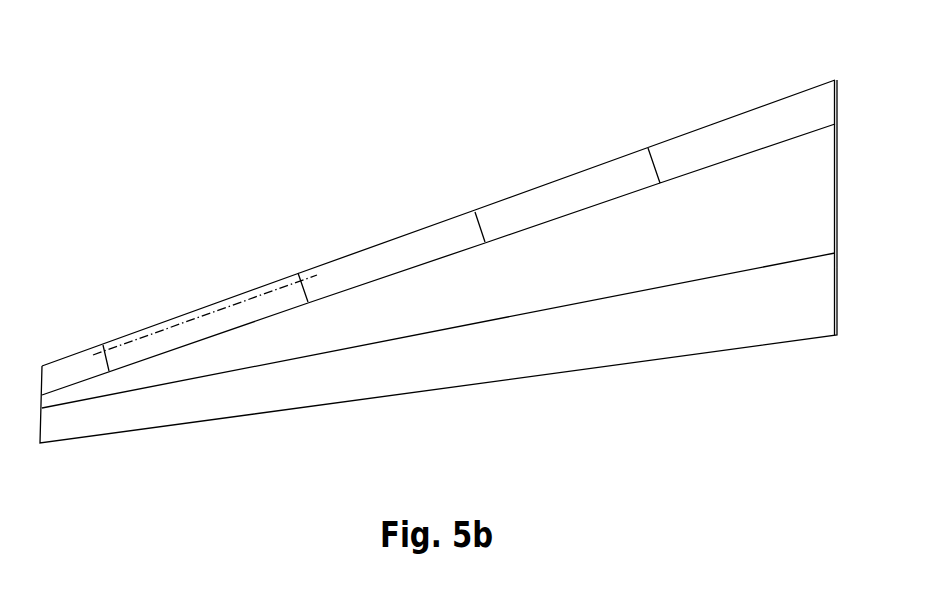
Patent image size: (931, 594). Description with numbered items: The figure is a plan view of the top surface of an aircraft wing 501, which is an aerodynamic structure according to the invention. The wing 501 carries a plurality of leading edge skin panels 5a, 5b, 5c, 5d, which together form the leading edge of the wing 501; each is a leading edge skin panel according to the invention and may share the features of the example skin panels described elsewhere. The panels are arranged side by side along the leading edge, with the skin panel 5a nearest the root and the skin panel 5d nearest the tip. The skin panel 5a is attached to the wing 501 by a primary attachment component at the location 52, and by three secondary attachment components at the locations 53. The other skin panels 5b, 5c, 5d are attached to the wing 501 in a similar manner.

The aircraft wing 501 is at (433, 153).
The leading edge skin panel 5a is at (200, 330).
The leading edge skin panel 5b is at (387, 260).
The leading edge skin panel 5c is at (549, 202).
The leading edge skin panel 5d is at (702, 143).
The primary attachment component location 52 is at (233, 303).
The secondary attachment component locations 53 is at (297, 282).